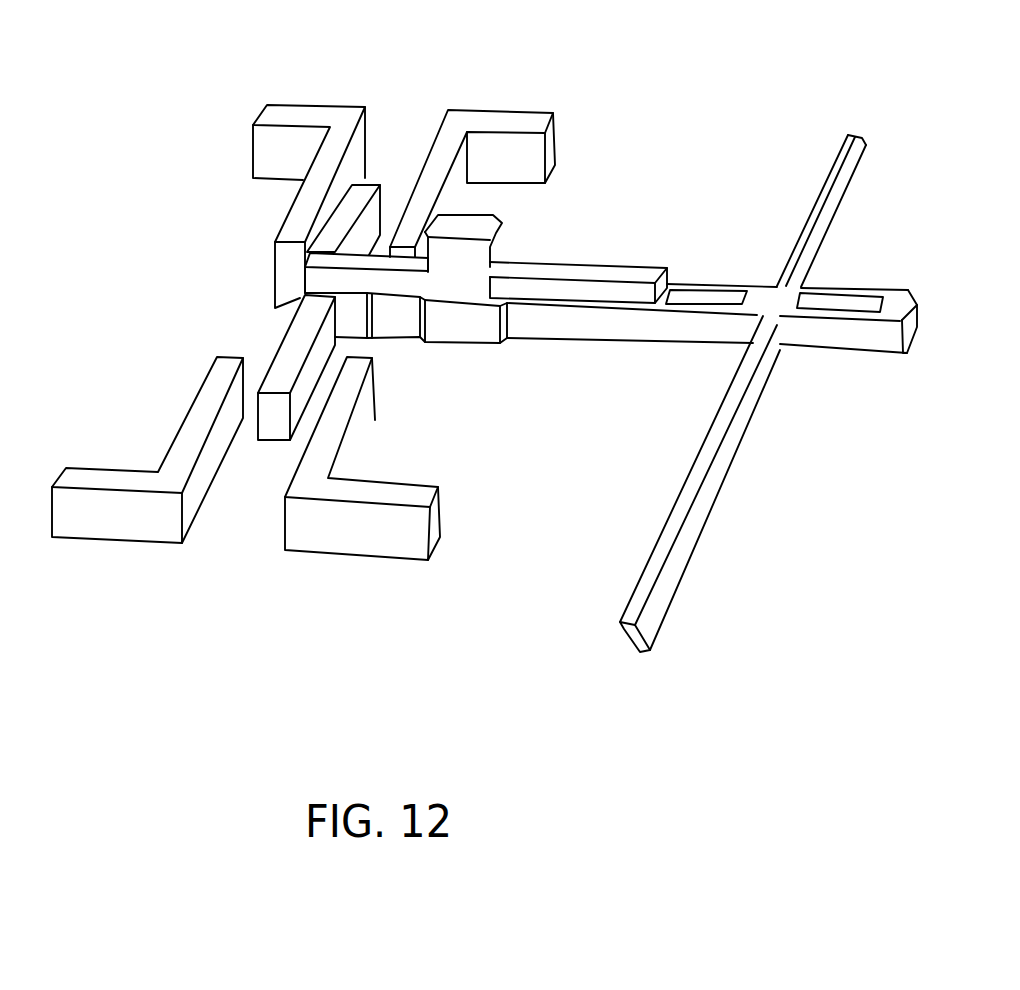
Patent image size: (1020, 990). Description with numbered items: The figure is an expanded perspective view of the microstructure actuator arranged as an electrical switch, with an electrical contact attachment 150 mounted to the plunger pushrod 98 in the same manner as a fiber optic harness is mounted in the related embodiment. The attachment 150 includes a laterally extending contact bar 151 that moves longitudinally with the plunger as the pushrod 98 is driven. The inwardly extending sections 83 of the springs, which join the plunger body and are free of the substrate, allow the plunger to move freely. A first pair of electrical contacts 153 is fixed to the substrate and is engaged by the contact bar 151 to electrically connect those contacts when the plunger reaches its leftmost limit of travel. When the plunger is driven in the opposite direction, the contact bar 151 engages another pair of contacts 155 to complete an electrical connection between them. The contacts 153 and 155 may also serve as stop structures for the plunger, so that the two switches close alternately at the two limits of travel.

The inwardly extending sections 83 is at (832, 225).
The plunger pushrod 98 is at (630, 343).
The electrical contact attachment 150 is at (498, 250).
The contact bar 151 is at (283, 333).
The first pair of electrical contacts 153 is at (293, 213).
The another pair of contacts 155 is at (440, 148).